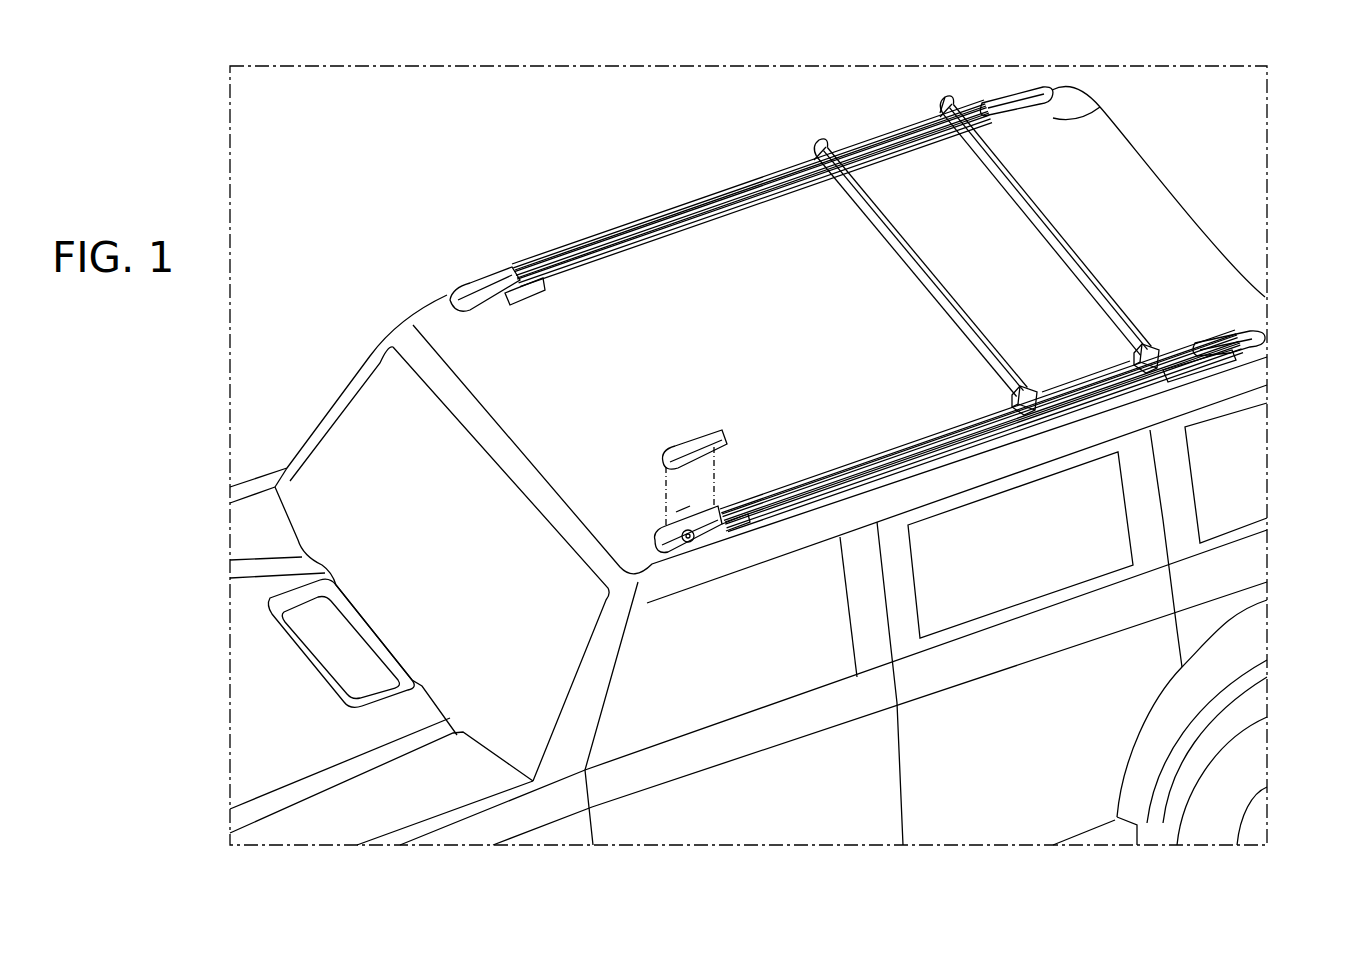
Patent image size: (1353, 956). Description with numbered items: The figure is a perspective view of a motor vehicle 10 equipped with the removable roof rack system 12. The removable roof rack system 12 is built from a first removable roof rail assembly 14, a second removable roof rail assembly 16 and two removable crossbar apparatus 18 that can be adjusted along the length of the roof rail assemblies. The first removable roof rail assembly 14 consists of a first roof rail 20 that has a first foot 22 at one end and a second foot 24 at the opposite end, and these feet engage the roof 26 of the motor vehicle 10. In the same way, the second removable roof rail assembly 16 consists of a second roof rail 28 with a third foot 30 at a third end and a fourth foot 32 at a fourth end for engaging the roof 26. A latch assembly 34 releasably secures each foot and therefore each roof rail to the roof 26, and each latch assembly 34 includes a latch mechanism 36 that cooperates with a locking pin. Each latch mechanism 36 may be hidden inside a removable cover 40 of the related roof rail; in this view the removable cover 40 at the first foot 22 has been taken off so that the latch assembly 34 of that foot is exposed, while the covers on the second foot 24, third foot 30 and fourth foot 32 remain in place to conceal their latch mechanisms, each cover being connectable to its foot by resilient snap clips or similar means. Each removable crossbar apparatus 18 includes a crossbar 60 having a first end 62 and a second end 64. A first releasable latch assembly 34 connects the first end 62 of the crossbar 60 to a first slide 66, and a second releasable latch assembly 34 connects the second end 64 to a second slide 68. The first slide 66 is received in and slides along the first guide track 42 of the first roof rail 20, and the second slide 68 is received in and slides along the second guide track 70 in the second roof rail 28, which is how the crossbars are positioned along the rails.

The motor vehicle 10 is at (343, 280).
The removable roof rack system 12 is at (950, 88).
The first removable roof rail assembly 14 is at (877, 428).
The second removable roof rail assembly 16 is at (622, 218).
The removable crossbar apparatus 18 is at (1070, 163).
The first roof rail 20 is at (907, 442).
The first foot 22 is at (652, 540).
The second foot 24 is at (1240, 360).
The roof 26 is at (662, 330).
The second roof rail 28 is at (715, 190).
The third foot 30 is at (497, 302).
The fourth foot 32 is at (1042, 116).
The latch assembly 34 is at (680, 516).
The latch mechanism 36 is at (692, 548).
The removable cover 40 is at (478, 292).
The first guide track 42 is at (806, 478).
The crossbar 60 is at (906, 266).
The first end 62 is at (1013, 392).
The second end 64 is at (943, 106).
The first slide 66 is at (1129, 357).
The second slide 68 is at (810, 160).
The second guide track 70 is at (773, 172).